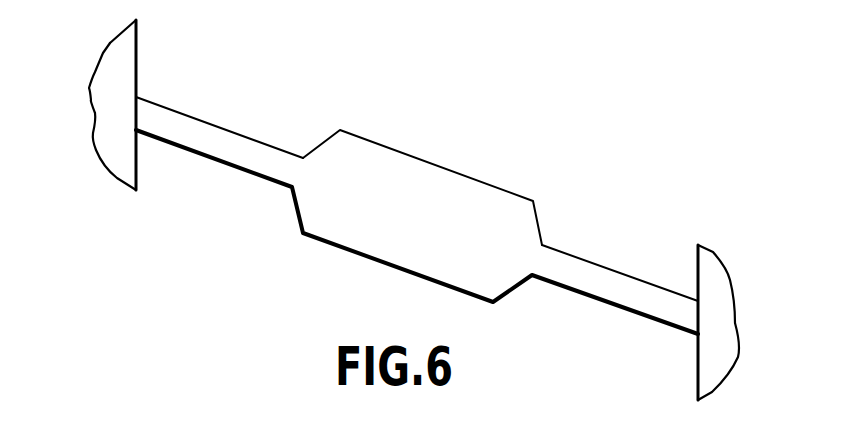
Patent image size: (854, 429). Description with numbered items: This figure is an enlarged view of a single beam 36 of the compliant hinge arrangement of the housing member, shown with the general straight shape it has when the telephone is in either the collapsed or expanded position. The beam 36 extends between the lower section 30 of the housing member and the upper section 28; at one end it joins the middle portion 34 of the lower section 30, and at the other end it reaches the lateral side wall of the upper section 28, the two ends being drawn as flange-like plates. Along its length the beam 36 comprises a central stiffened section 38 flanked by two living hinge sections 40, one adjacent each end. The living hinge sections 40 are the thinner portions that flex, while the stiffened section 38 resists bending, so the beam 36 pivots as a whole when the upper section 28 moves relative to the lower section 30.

The upper section 28 is at (728, 295).
The lower section 30 is at (105, 103).
The middle portion 34 is at (111, 58).
The beam 36 is at (382, 145).
The stiffened section 38 is at (365, 235).
The living hinge section 40 is at (195, 128).